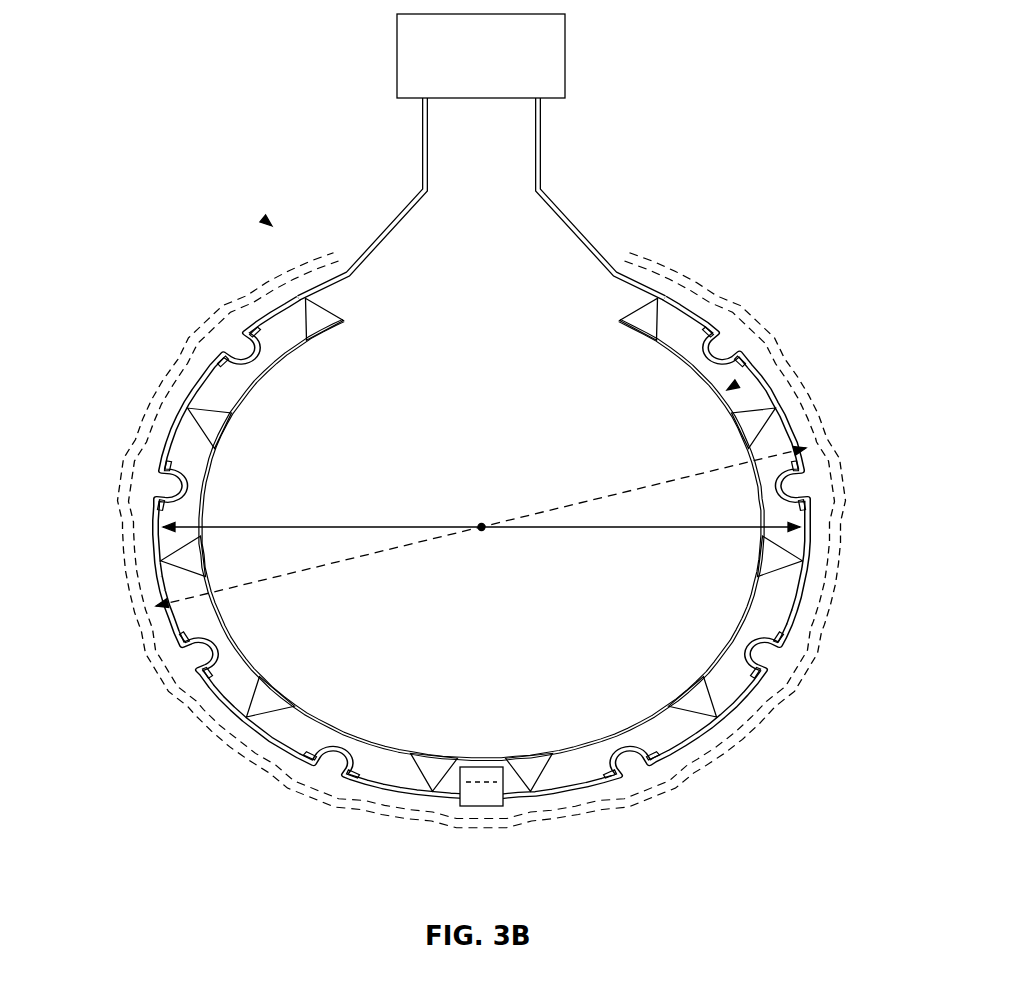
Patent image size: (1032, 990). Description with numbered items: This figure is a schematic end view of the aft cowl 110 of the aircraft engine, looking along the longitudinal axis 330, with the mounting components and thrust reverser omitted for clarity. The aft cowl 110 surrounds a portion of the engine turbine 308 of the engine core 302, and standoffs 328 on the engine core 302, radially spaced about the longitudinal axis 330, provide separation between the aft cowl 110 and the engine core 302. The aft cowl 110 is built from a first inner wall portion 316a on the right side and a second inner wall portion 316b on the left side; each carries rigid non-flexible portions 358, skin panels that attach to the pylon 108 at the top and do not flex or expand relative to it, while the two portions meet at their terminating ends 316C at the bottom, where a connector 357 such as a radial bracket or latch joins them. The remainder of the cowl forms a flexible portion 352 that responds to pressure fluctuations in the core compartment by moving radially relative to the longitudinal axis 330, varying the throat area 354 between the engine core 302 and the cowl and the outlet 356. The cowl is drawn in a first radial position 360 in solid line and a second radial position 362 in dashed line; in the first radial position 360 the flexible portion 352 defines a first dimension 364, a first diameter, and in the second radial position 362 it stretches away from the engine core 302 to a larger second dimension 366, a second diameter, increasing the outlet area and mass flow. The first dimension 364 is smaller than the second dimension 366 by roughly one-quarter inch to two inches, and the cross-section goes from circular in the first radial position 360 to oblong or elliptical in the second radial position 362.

The pylon 108 is at (397, 55).
The aft cowl 110 is at (272, 226).
The engine core 302 is at (482, 540).
The engine turbine 308 is at (636, 722).
The first inner wall portion 316a is at (803, 606).
The second inner wall portion 316b is at (222, 712).
The terminating ends 316C is at (447, 808).
The standoffs 328 is at (268, 708).
The longitudinal axis 330 is at (480, 524).
The flexible portion 352 is at (127, 592).
The throat area 354 is at (727, 390).
The outlet 356 is at (385, 793).
The connector 357 is at (480, 795).
The non-flexible portions 358 is at (396, 214).
The first radial position 360 is at (282, 296).
The second radial position 362 is at (157, 396).
The first dimension 364 is at (653, 533).
The second dimension 366 is at (610, 492).